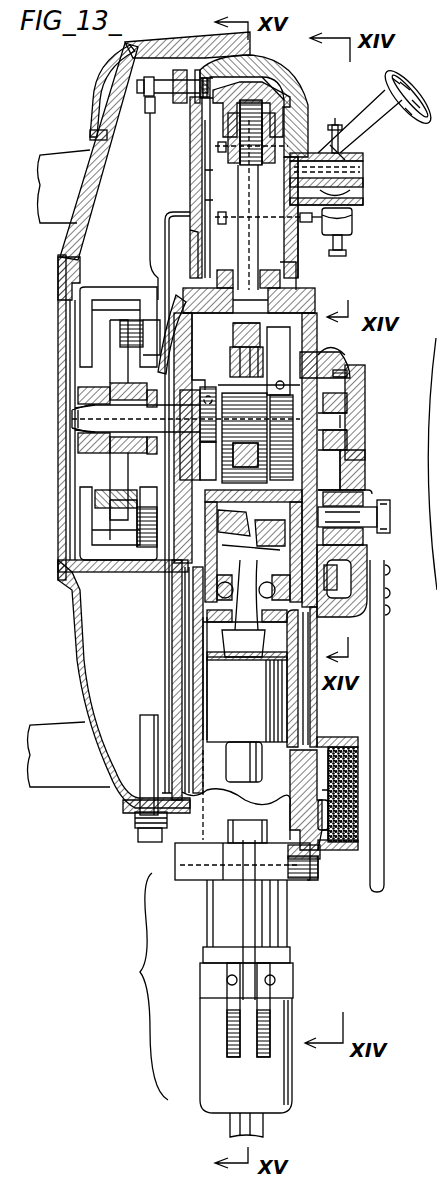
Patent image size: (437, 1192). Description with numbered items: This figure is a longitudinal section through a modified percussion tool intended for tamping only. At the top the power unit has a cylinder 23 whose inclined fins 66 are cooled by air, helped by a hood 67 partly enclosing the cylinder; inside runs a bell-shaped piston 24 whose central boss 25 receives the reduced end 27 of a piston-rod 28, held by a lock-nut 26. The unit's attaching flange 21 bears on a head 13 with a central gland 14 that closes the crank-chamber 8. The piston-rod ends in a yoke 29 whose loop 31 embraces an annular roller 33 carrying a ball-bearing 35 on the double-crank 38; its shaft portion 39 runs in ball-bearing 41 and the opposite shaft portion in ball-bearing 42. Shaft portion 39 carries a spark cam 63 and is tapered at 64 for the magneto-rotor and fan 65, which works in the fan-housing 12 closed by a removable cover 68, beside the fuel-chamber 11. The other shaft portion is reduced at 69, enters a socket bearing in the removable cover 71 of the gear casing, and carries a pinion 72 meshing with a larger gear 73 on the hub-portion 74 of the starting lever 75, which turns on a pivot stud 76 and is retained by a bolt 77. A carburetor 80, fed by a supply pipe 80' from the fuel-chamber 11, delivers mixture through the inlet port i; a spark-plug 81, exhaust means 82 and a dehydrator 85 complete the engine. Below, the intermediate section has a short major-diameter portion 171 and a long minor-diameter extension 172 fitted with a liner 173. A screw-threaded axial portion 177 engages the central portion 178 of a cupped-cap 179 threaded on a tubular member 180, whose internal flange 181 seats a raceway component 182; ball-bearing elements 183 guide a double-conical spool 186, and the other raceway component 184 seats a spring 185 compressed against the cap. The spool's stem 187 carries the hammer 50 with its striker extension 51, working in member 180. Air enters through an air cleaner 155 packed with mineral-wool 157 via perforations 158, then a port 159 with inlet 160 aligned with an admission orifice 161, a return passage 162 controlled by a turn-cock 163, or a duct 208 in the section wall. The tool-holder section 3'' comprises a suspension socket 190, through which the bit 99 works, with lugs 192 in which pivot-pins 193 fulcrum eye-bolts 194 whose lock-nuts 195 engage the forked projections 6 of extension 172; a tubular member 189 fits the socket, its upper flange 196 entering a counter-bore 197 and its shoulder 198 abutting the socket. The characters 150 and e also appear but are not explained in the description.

The tool-holder section 3'' is at (136, 986).
The forked projections 6 is at (264, 866).
The crank-chamber 8 is at (180, 292).
The fuel-chamber 11 is at (88, 640).
The fan-housing 12 is at (76, 472).
The head 13 is at (316, 300).
The gland 14 is at (286, 268).
The attaching flange 21 is at (312, 288).
The cylinder 23 is at (218, 197).
The bell-shaped piston 24 is at (278, 143).
The central boss 25 is at (236, 127).
The lock-nut 26 is at (293, 152).
The reduced end 27 is at (264, 100).
The piston-rod 28 is at (258, 238).
The yoke 29 is at (258, 340).
The loop 31 is at (228, 366).
The Z-section annular roller 33 is at (233, 340).
The ball-bearing 35 is at (290, 385).
The double-crank 38 is at (310, 352).
The shaft portion 39 is at (186, 418).
The ball-bearing 41 is at (248, 376).
The ball-bearing 42 is at (322, 362).
The hammer 50 is at (247, 697).
The striker extension 51 is at (244, 762).
The spark cam 63 is at (135, 392).
The tapered portion 64 is at (93, 413).
The magneto-rotor and fan 65 is at (85, 342).
The inclined fins 66 is at (268, 75).
The hood 67 is at (100, 168).
The removable cover 68 is at (62, 305).
The reduced part 69 is at (348, 416).
The removable cover 71 is at (364, 390).
The pinion 72 is at (358, 407).
The gear 73 is at (368, 466).
The hub-portion 74 is at (368, 498).
The starting lever 75 is at (385, 700).
The pivot stud 76 is at (372, 510).
The bolt 77 is at (390, 523).
The carburetor 80 is at (344, 232).
The supply pipe 80' is at (168, 502).
The spark-plug 81 is at (160, 92).
The exhaust means 82 is at (410, 97).
The dehydrator 85 is at (148, 740).
The tool or bit 99 is at (263, 1126).
The gear 150 is at (147, 352).
The air cleaner 155 is at (360, 779).
The mineral-wool 157 is at (333, 795).
The perforations 158 is at (360, 832).
The port 159 is at (356, 768).
The inlet 160 is at (356, 754).
The admission orifice 161 is at (310, 748).
The return passage 162 is at (302, 858).
The turn-cock 163 is at (335, 808).
The major-diameter cylindrical portion 171 is at (200, 578).
The minor-diameter portion 172 is at (205, 748).
The liner 173 is at (206, 694).
The screw-threaded axial portion 177 is at (207, 468).
The central portion 178 is at (205, 492).
The cupped-cap 179 is at (138, 568).
The tubular member 180 is at (193, 672).
The internal flange 181 is at (212, 638).
The lower raceway component 182 is at (208, 620).
The ball-bearing elements 183 is at (205, 604).
The upper raceway component 184 is at (205, 590).
The spring 185 is at (268, 520).
The double-conical spool 186 is at (252, 622).
The stem 187 is at (244, 609).
The tubular member 189 is at (277, 931).
The suspension socket 190 is at (276, 1072).
The lugs 192 is at (265, 1022).
The pivot-pins 193 is at (273, 978).
The eye-bolts 194 is at (256, 907).
The lock-nuts 195 is at (228, 834).
The upper flange 196 is at (310, 865).
The counter-bore 197 is at (318, 874).
The shoulder 198 is at (291, 947).
The passage or duct 208 is at (308, 700).
The passage e is at (290, 170).
The inlet port i is at (290, 192).